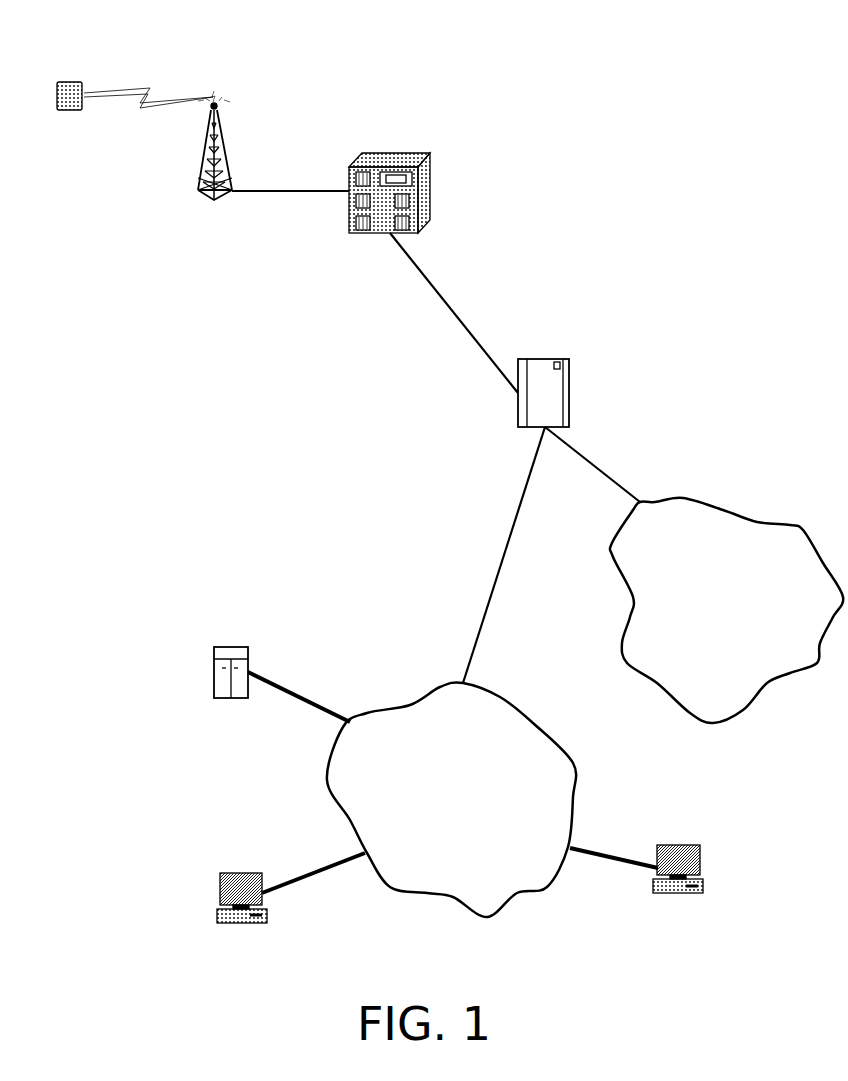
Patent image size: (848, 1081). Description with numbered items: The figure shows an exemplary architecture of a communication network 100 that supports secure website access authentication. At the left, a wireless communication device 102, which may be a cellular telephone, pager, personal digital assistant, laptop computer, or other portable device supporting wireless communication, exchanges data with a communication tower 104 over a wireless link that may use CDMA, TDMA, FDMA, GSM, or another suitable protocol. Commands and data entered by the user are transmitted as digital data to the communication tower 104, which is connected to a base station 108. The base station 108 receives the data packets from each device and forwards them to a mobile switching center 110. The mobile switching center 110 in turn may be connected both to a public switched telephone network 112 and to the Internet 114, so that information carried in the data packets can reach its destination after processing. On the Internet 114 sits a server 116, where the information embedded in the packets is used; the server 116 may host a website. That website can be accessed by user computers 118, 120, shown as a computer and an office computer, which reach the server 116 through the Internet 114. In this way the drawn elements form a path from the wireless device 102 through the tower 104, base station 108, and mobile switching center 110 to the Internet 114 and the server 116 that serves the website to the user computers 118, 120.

The communication network 100 is at (508, 69).
The communication device 102 is at (85, 90).
The communication tower 104 is at (220, 128).
The base station 108 is at (431, 177).
The mobile switching center 110 is at (563, 358).
The public switched telephone network 112 is at (727, 510).
The Internet 114 is at (531, 721).
The server 116 is at (232, 648).
The user computer 118 is at (243, 874).
The user computer 120 is at (678, 846).